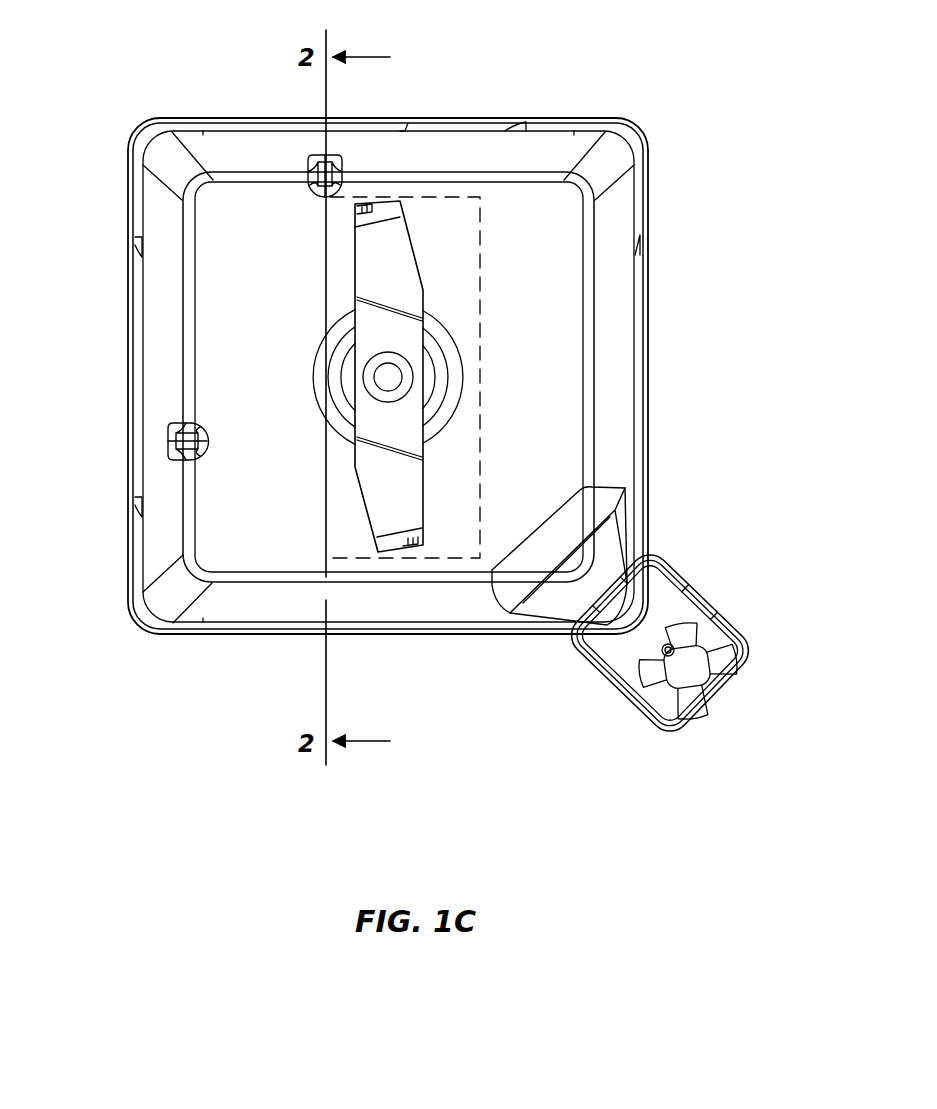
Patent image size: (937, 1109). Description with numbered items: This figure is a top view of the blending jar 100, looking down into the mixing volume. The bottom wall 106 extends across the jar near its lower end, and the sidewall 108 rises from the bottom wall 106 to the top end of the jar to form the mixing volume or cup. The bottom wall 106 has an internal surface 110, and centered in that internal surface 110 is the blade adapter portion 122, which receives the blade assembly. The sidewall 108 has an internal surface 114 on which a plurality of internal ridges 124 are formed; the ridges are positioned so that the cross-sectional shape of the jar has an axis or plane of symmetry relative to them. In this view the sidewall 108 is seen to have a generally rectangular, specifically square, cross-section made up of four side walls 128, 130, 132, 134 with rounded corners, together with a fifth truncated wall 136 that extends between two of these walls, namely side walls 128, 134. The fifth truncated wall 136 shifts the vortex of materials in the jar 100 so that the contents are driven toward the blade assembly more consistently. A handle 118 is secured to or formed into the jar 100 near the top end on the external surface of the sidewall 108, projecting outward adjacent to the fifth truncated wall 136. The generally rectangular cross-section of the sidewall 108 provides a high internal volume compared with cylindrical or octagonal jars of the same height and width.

The blending jar 100 is at (92, 92).
The bottom wall 106 is at (550, 348).
The sidewall 108 is at (610, 258).
The internal surface 110 is at (545, 407).
The internal surface 114 is at (523, 152).
The handle 118 is at (743, 632).
The blade adapter portion 122 is at (432, 363).
The internal ridges 124 is at (315, 192).
The side wall 128 is at (620, 450).
The side wall 130 is at (418, 152).
The side wall 132 is at (158, 297).
The side wall 134 is at (385, 608).
The fifth truncated wall 136 is at (540, 578).